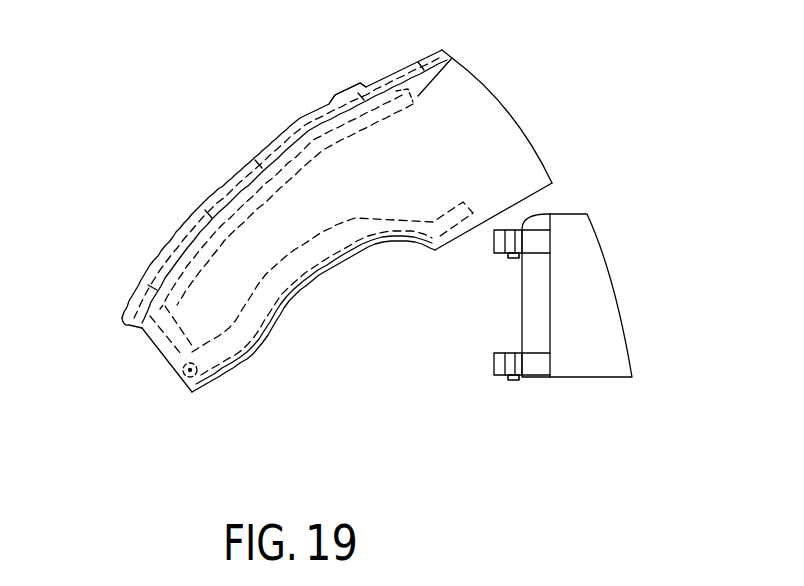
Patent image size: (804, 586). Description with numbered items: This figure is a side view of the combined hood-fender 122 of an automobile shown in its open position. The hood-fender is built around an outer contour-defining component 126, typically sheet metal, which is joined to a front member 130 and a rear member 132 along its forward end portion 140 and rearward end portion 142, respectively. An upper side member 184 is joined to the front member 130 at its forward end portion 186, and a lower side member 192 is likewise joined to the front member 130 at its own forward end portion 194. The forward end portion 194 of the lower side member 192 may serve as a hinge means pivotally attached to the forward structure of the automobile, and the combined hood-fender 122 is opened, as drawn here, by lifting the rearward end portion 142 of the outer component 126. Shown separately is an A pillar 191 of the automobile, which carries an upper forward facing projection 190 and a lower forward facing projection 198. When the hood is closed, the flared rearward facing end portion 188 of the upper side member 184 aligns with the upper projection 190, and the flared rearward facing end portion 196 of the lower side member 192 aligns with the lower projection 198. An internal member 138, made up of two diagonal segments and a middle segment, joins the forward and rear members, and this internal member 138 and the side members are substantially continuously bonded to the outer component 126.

The combined hood-fender 122 is at (191, 142).
The outer contour-defining component 126 is at (475, 144).
The front member 130 is at (170, 356).
The rear member 132 is at (363, 87).
The internal member 138 is at (261, 152).
The forward end portion 140 is at (127, 323).
The rearward end portion 142 is at (493, 92).
The upper side member 184 is at (196, 196).
The forward end portion 186 is at (133, 303).
The flared rearward facing end portion 188 is at (452, 58).
The upper forward facing projection 190 is at (498, 250).
The A pillar 191 is at (603, 295).
The lower side member 192 is at (356, 216).
The forward end portion 194 is at (205, 378).
The flared rearward facing end portion 196 is at (457, 227).
The lower forward facing projection 198 is at (495, 364).